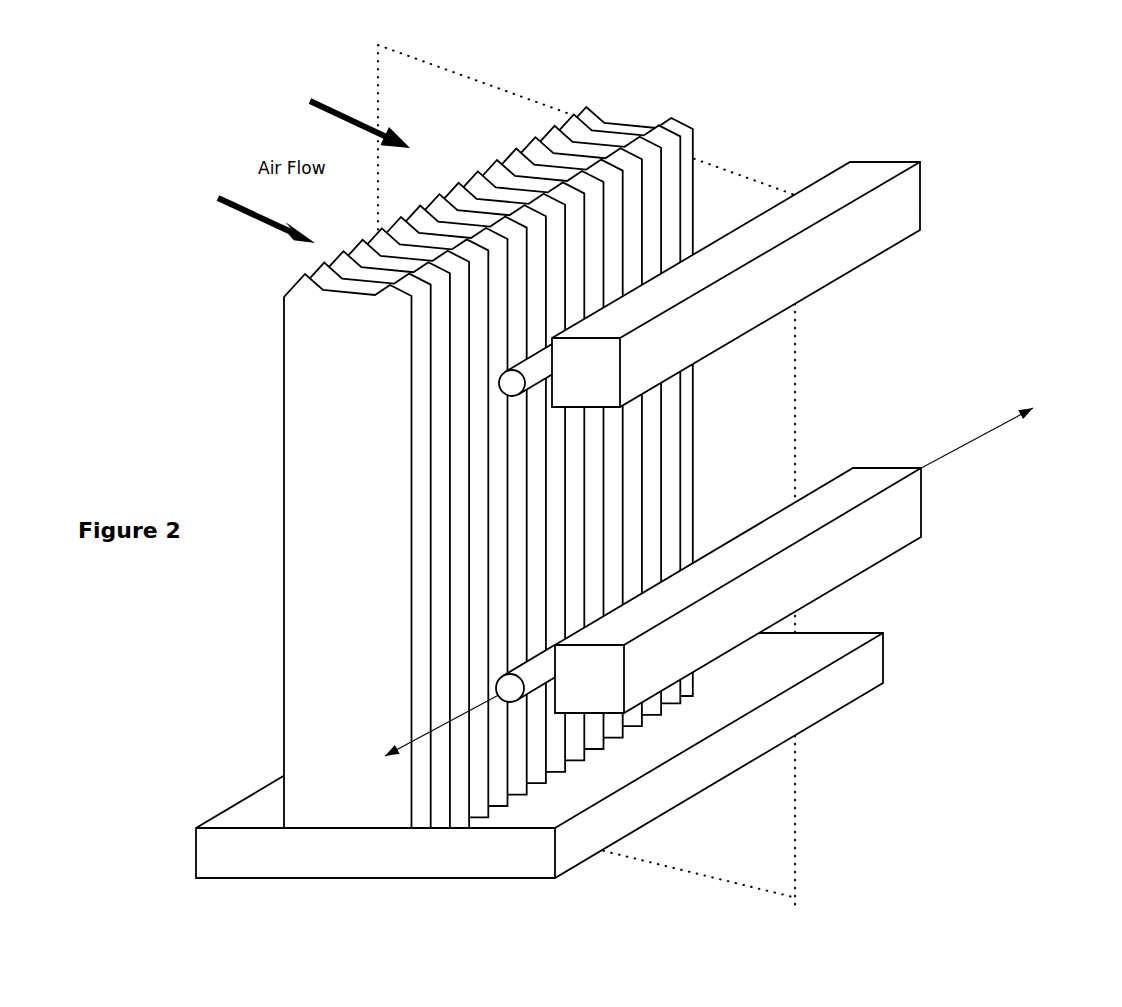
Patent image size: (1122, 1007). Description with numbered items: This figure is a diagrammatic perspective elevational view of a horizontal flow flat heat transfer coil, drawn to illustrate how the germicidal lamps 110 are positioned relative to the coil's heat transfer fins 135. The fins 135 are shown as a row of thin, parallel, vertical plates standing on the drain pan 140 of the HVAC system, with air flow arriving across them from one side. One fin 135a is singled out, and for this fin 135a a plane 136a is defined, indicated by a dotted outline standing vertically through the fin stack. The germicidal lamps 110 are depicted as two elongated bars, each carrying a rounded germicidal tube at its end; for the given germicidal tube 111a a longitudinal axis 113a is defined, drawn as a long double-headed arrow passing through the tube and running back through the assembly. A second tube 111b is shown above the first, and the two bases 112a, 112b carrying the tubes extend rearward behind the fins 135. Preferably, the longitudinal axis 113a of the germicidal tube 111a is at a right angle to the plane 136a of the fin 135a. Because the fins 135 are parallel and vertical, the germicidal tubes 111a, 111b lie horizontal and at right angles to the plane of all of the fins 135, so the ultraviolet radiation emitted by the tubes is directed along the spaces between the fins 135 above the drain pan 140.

The germicidal lamps 110 is at (779, 460).
The germicidal tube 111a is at (524, 697).
The upper heat pipe 111b is at (513, 390).
The lower mounting bar 112a is at (891, 522).
The upper mounting bar 112b is at (888, 207).
The longitudinal axis 113a is at (714, 585).
The fins 135 is at (505, 140).
The fin 135a is at (676, 124).
The plane 136a is at (762, 180).
The drain pan 140 is at (226, 853).